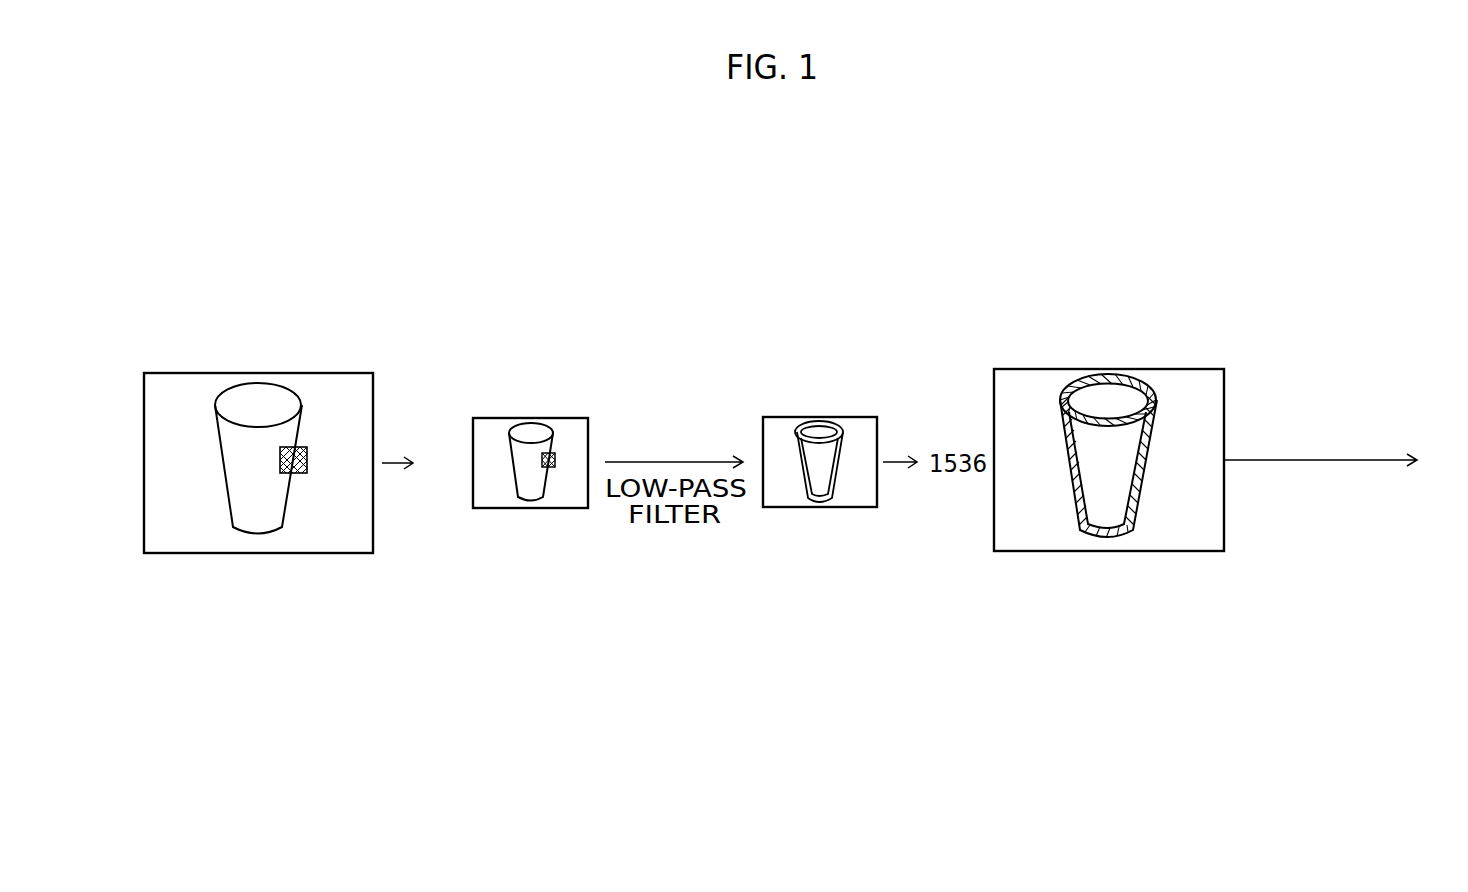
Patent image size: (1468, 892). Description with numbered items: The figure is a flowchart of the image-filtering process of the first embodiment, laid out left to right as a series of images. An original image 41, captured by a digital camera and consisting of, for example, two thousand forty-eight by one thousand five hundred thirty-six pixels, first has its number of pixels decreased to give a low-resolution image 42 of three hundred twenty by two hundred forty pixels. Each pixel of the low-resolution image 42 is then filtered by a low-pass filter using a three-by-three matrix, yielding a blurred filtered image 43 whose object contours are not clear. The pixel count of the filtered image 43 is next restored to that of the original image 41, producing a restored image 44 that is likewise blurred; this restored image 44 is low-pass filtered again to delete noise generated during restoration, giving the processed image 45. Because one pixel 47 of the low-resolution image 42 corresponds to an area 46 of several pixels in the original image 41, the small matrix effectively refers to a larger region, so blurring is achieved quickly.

The original image 41 is at (220, 553).
The low-resolution image 42 is at (495, 508).
The filtered image 43 is at (818, 507).
The restored image 44 is at (1112, 551).
The processed image 45 is at (1341, 488).
The area of several pixels 46 is at (307, 463).
The pixel 47 is at (555, 462).